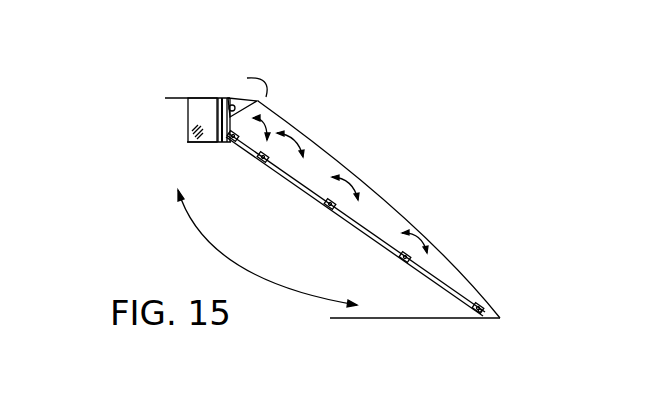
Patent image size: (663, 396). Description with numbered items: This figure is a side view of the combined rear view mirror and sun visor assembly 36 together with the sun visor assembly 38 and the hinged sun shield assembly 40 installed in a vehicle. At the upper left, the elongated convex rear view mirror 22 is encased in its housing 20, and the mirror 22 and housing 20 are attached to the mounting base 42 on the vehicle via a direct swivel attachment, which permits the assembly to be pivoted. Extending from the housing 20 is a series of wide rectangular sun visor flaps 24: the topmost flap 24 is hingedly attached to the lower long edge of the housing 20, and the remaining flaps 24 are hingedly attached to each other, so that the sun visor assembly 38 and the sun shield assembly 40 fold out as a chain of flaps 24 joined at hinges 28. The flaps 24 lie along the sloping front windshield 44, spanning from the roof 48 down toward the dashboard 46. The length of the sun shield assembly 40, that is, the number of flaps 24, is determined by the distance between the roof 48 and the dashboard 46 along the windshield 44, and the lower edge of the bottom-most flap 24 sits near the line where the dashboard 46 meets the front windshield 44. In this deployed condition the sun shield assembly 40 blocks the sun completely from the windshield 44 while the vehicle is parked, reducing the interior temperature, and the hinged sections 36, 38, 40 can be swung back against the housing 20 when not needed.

The housing 20 is at (210, 143).
The rear view mirror 22 is at (208, 110).
The sun visor flap 24 is at (263, 158).
The hinge brackets 28 is at (232, 145).
The rear view mirror and sun visor assembly 36 is at (279, 119).
The sun visor assembly 38 is at (313, 172).
The sun shield assembly 40 is at (378, 210).
The mounting base 42 is at (253, 101).
The front windshield 44 is at (460, 265).
The dashboard 46 is at (395, 320).
The roof 48 is at (245, 84).